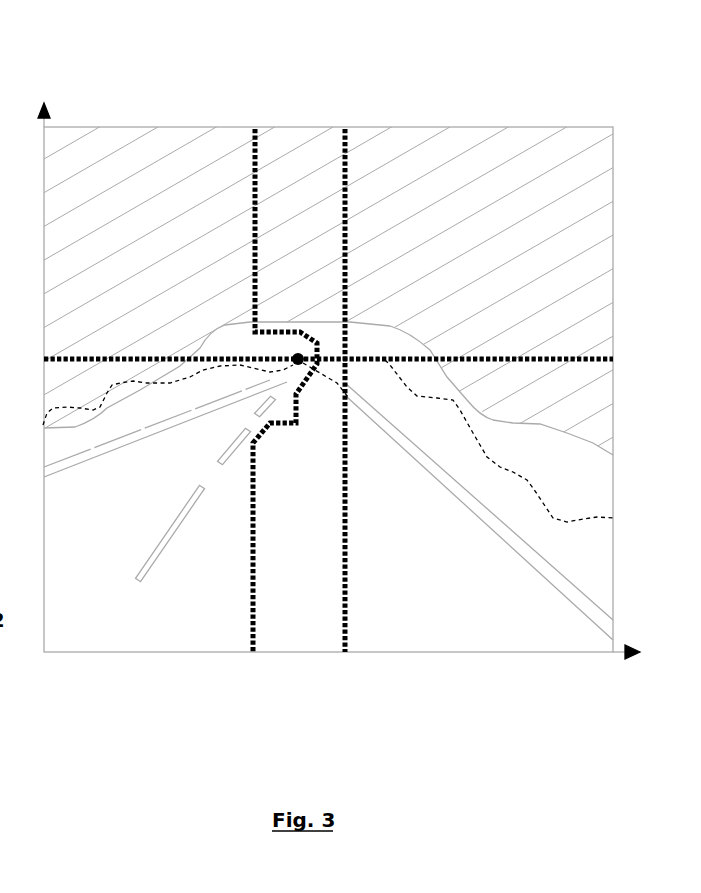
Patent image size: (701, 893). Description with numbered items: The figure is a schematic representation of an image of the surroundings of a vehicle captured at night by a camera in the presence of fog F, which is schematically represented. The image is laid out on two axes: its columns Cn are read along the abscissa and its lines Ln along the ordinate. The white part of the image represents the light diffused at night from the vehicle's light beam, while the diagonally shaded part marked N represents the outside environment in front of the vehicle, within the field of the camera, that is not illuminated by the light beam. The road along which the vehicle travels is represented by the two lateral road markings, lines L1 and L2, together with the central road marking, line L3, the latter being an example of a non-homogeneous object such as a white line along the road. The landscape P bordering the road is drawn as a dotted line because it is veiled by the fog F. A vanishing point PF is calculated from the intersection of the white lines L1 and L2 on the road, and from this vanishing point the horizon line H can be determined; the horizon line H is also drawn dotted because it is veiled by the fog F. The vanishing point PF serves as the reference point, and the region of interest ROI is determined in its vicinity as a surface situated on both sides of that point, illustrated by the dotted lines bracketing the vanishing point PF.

The lines Ln is at (40, 102).
The columns Cn is at (619, 667).
The region of interest ROI is at (348, 112).
The vanishing point PF is at (309, 338).
The horizon line H is at (381, 340).
The environment outside not illuminated by the light beam N is at (534, 301).
The fog F is at (567, 428).
The landscape P is at (543, 485).
The lateral road marking line L1 is at (78, 473).
The lateral road marking line L2 is at (600, 593).
The central road marking line L3 is at (153, 532).